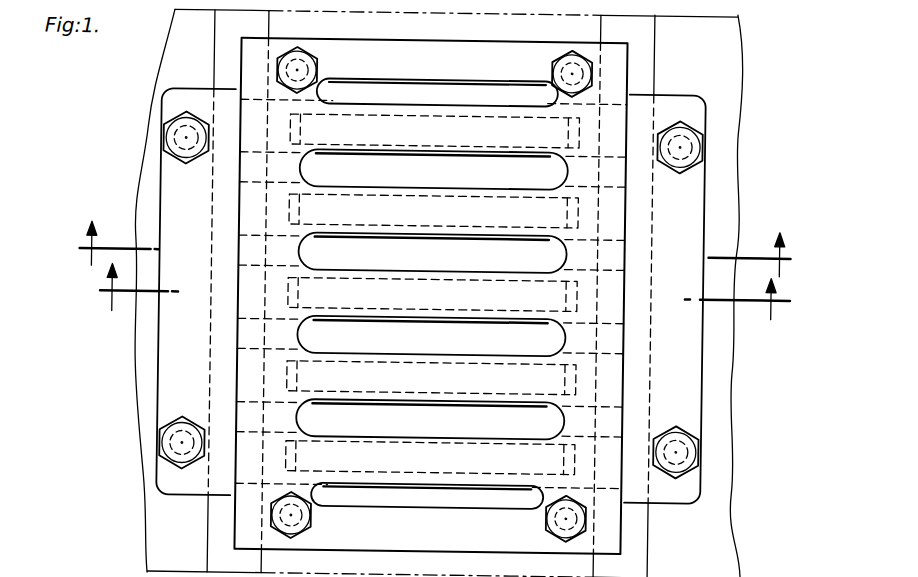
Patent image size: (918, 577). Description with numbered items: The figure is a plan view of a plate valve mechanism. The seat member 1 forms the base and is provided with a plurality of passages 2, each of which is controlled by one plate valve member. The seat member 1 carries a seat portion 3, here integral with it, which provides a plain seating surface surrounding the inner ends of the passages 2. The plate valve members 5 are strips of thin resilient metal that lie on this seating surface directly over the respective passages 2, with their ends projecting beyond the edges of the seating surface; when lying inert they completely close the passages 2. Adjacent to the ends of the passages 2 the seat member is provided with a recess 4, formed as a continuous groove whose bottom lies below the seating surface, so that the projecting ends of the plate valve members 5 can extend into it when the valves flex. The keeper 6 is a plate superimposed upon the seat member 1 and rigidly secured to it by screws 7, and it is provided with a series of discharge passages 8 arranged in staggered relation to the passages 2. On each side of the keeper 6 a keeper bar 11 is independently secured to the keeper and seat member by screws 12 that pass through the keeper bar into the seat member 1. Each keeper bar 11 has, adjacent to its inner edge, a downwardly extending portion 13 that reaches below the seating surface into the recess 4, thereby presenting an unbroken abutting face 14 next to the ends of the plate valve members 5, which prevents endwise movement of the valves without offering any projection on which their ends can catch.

The seat member 1 is at (162, 76).
The passages 2 is at (452, 450).
The seat portion 3 is at (439, 297).
The recess 4 is at (222, 550).
The plate valve members 5 is at (490, 150).
The keeper 6 is at (448, 32).
The screws 7 is at (297, 60).
The discharge passages 8 is at (416, 188).
The keeper bars 11 is at (175, 190).
The screws 12 is at (173, 137).
The downwardly extending portion 13 is at (216, 386).
The abutting face 14 is at (233, 339).